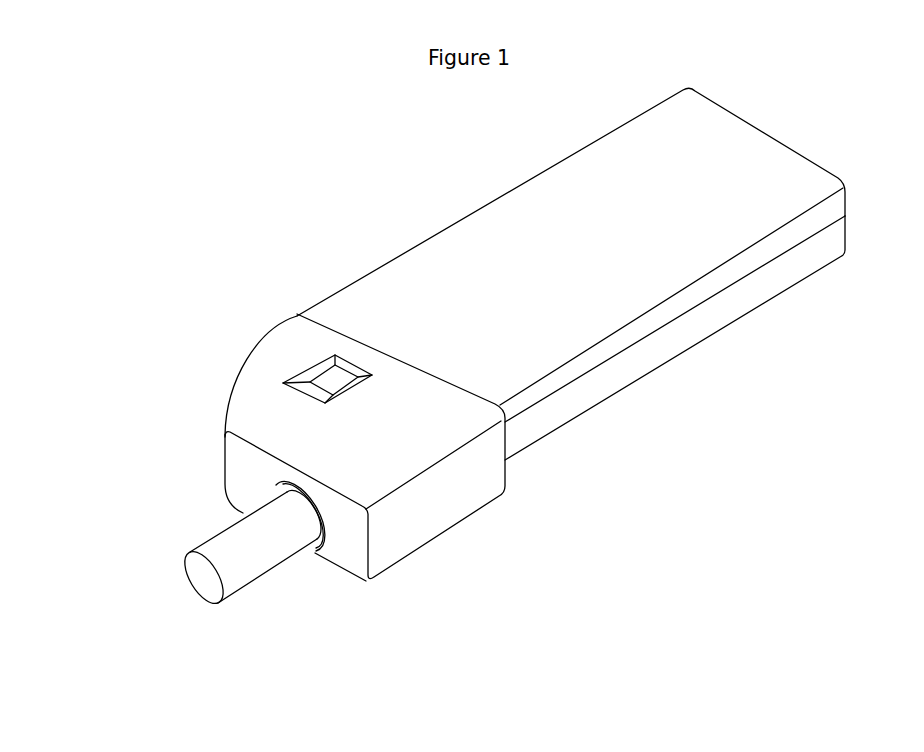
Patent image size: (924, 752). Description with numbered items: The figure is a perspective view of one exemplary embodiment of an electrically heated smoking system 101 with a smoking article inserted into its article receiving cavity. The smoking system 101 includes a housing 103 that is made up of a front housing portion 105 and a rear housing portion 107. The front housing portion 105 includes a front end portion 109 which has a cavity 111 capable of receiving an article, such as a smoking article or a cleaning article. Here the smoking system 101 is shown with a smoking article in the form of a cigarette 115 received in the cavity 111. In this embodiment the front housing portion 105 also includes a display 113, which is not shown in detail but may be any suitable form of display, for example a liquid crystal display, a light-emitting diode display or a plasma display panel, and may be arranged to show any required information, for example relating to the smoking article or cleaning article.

The electrically heated smoking system 101 is at (415, 193).
The housing 103 is at (702, 152).
The front housing portion 105 is at (440, 510).
The rear housing portion 107 is at (758, 287).
The front end portion 109 is at (250, 480).
The cavity 111 is at (327, 547).
The display 113 is at (332, 377).
The cigarette 115 is at (242, 560).